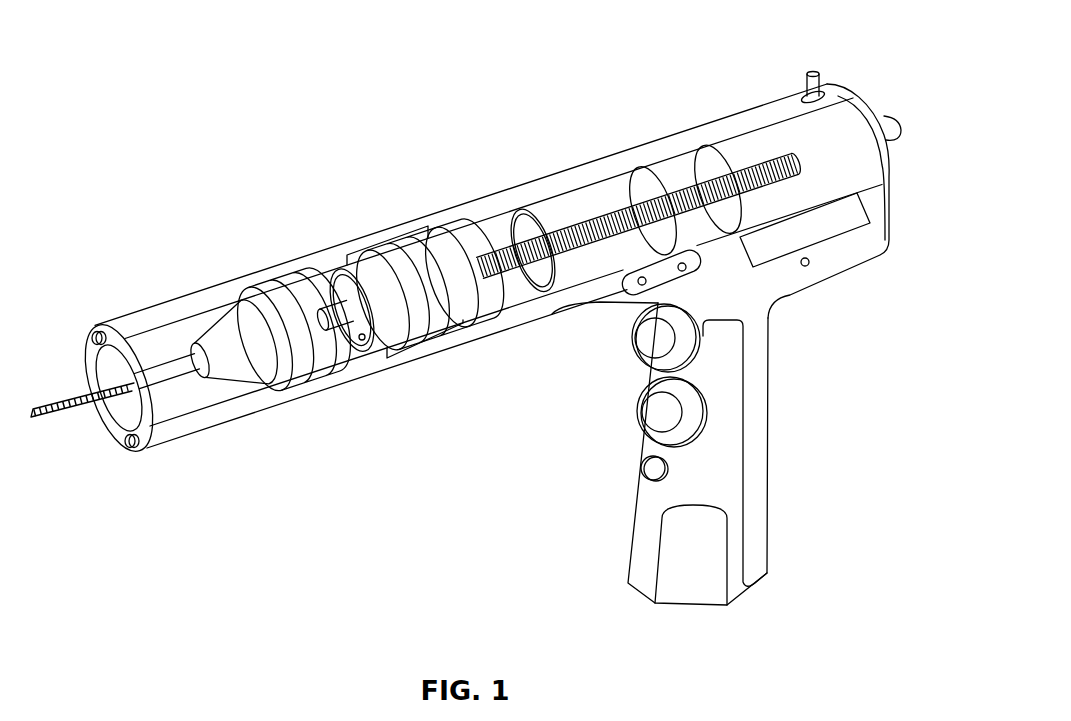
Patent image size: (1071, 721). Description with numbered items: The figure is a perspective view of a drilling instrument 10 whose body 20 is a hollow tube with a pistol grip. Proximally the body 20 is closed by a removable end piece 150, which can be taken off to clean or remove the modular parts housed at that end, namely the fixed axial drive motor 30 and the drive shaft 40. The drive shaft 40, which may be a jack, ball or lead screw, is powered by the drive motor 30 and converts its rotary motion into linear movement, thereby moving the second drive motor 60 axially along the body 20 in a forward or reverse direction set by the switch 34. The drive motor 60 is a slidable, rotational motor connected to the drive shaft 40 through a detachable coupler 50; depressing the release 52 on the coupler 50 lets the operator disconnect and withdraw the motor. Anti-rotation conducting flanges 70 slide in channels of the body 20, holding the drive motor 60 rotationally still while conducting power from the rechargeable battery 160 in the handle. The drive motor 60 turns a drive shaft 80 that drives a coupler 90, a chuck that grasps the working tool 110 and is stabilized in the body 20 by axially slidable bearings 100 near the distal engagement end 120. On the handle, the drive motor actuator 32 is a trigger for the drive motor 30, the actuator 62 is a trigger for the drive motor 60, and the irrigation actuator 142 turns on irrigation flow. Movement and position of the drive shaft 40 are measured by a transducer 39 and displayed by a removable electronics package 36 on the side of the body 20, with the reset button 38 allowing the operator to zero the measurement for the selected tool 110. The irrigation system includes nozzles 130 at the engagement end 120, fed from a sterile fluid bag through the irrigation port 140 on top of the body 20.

The instrument 10 is at (475, 200).
The body 20 is at (857, 120).
The drive motor 30 is at (590, 195).
The drive motor actuator 32 is at (630, 347).
The switch 34 is at (623, 285).
The removable electronics package 36 is at (868, 207).
The axial measurement selector/reset button 38 is at (807, 263).
The transducer 39 is at (680, 160).
The drive shaft 40 is at (753, 165).
The detachable coupler 50 is at (450, 237).
The release 52 is at (352, 342).
The drive motor 60 is at (357, 273).
The actuator 62 is at (637, 414).
The anti-rotation conducting flanges 70 is at (385, 247).
The drive shaft 80 is at (333, 298).
The coupler 90 is at (210, 338).
The bearings 100 is at (252, 297).
The working tool 110 is at (74, 395).
The engagement end 120 is at (110, 428).
The irrigation nozzles 130 is at (140, 448).
The irrigation port 140 is at (813, 70).
The irrigation actuator 142 is at (642, 469).
The end piece 150 is at (900, 125).
The battery 160 is at (688, 596).